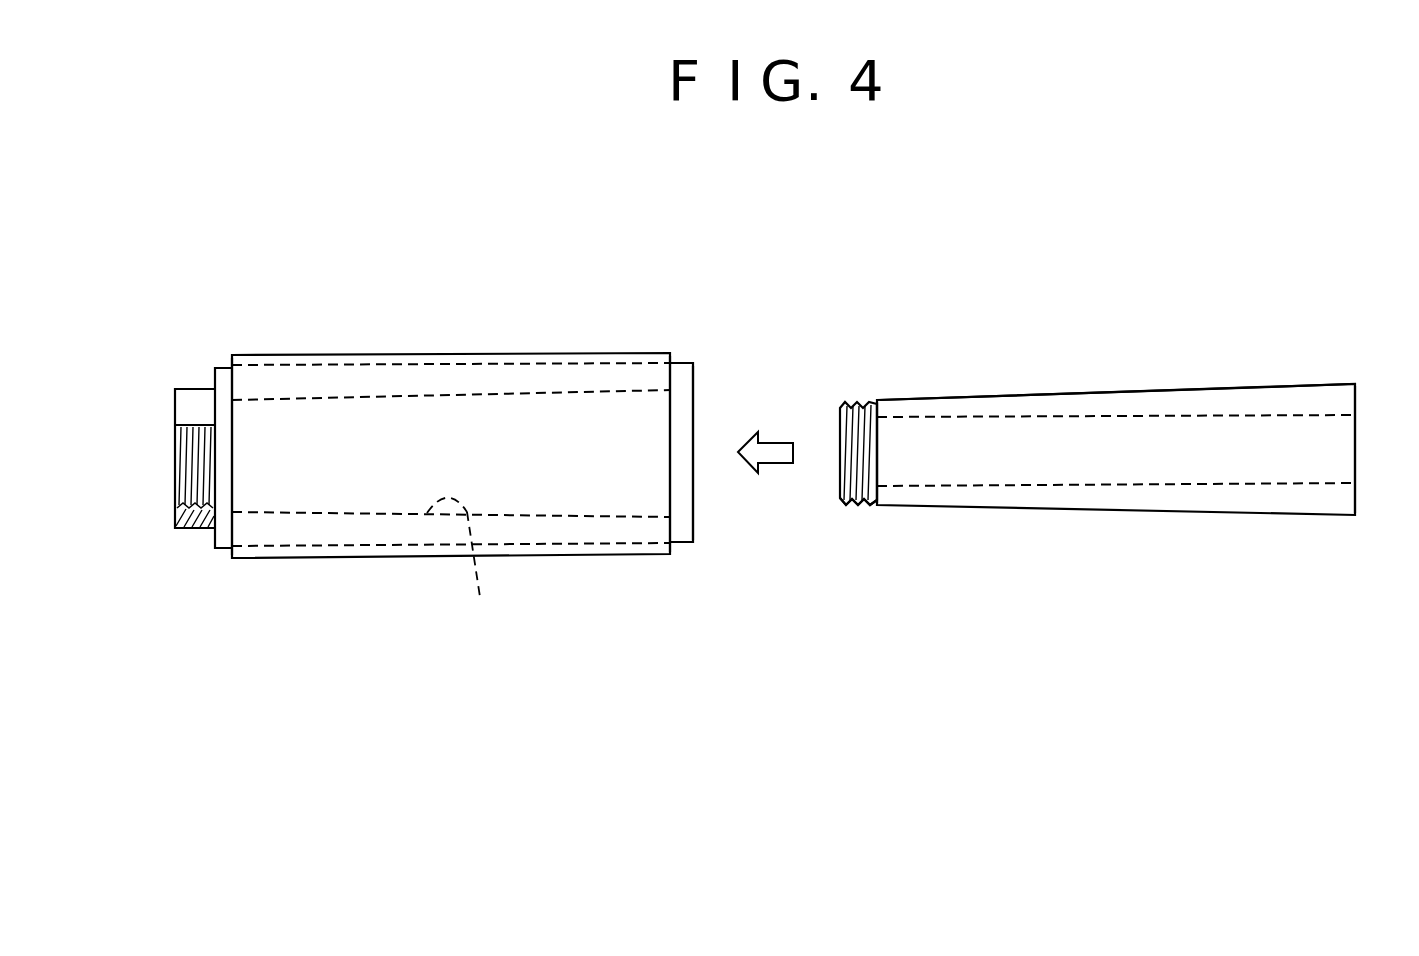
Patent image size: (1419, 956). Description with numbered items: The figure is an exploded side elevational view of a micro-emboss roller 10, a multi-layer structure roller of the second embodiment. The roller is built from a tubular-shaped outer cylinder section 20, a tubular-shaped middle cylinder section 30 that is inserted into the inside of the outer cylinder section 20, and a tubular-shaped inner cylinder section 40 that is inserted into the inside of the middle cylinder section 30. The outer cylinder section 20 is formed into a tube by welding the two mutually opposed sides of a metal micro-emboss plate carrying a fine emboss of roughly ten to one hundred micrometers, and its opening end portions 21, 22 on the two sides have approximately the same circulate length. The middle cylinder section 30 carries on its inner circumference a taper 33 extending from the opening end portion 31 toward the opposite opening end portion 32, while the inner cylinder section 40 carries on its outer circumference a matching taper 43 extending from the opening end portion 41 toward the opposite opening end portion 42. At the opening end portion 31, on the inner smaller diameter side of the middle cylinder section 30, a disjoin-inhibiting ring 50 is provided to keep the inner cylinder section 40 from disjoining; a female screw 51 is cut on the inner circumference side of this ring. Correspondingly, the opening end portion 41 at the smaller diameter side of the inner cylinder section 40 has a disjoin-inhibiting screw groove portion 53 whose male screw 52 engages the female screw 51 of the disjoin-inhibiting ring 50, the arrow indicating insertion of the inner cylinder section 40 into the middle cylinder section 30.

The micro-emboss roller 10 is at (279, 185).
The outer cylinder section 20 is at (452, 355).
The opening end portion 21 is at (229, 372).
The opening end portion 22 is at (672, 410).
The middle cylinder section 30 is at (682, 362).
The opening end portion 31 is at (213, 371).
The opening end portion 32 is at (693, 430).
The taper 33 is at (465, 569).
The inner cylinder section 40 is at (1227, 395).
The opening end portion 41 is at (860, 400).
The opening end portion 42 is at (1357, 400).
The taper 43 is at (1092, 392).
The disjoin-inhibiting ring 50 is at (192, 530).
The female screw 51 is at (183, 463).
The male screw 52 is at (847, 467).
The disjoin-inhibiting screw groove portion 53 is at (858, 505).